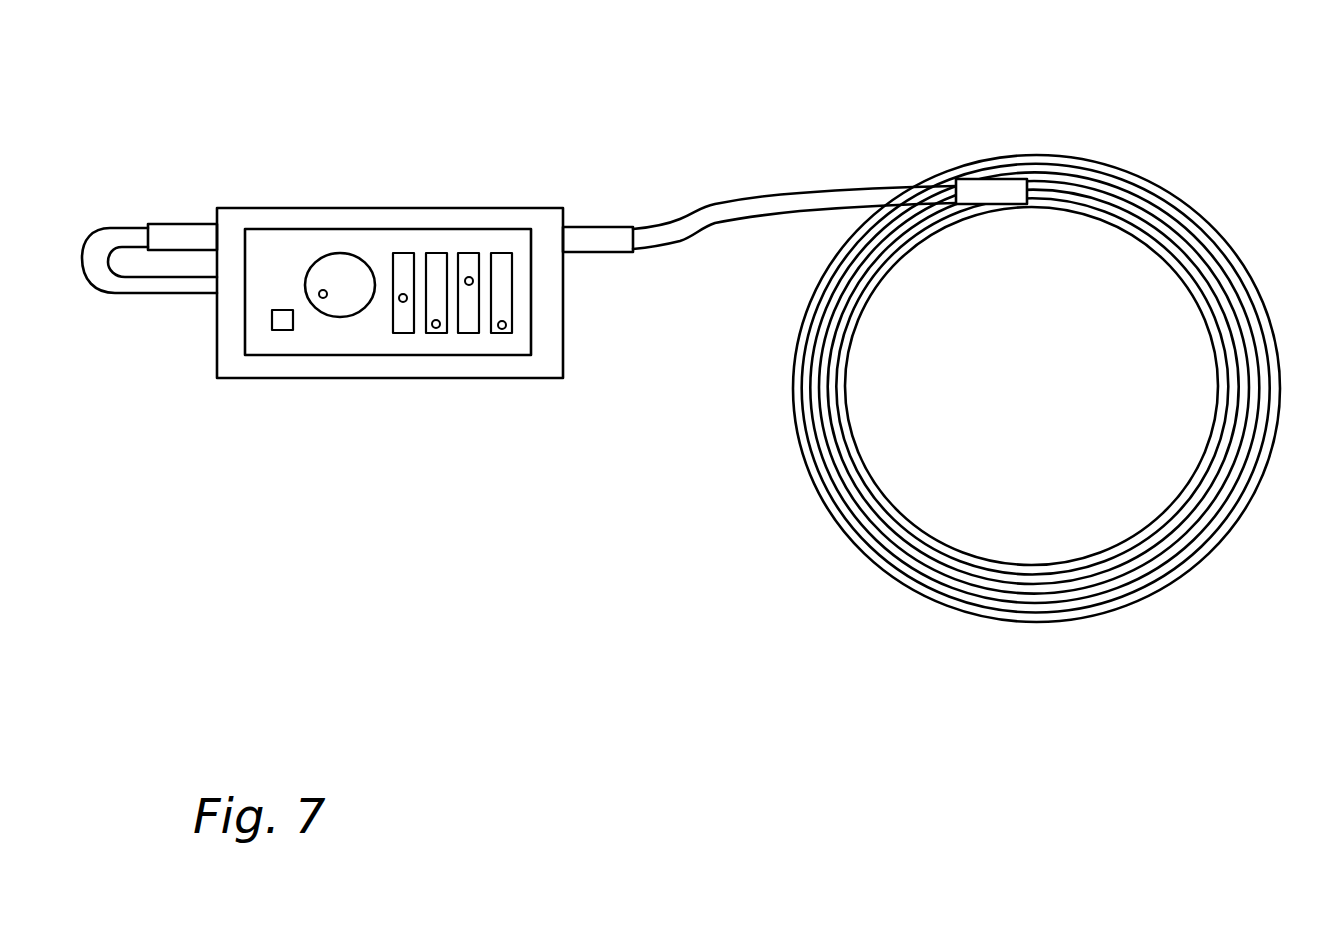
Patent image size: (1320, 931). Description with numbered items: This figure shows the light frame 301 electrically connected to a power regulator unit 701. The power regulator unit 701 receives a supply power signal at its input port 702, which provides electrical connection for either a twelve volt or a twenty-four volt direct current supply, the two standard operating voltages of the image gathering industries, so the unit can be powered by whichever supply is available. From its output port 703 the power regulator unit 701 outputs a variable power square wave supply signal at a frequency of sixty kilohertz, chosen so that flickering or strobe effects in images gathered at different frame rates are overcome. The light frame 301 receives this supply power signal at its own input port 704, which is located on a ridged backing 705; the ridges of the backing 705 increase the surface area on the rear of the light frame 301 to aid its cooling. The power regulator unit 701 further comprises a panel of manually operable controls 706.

The light frame 301 is at (976, 352).
The power regulator unit 701 is at (390, 357).
The input port 702 is at (588, 240).
The output port 703 is at (188, 236).
The input port 704 is at (997, 192).
The ridged backing 705 is at (1210, 542).
The panel of manually operable controls 706 is at (303, 356).